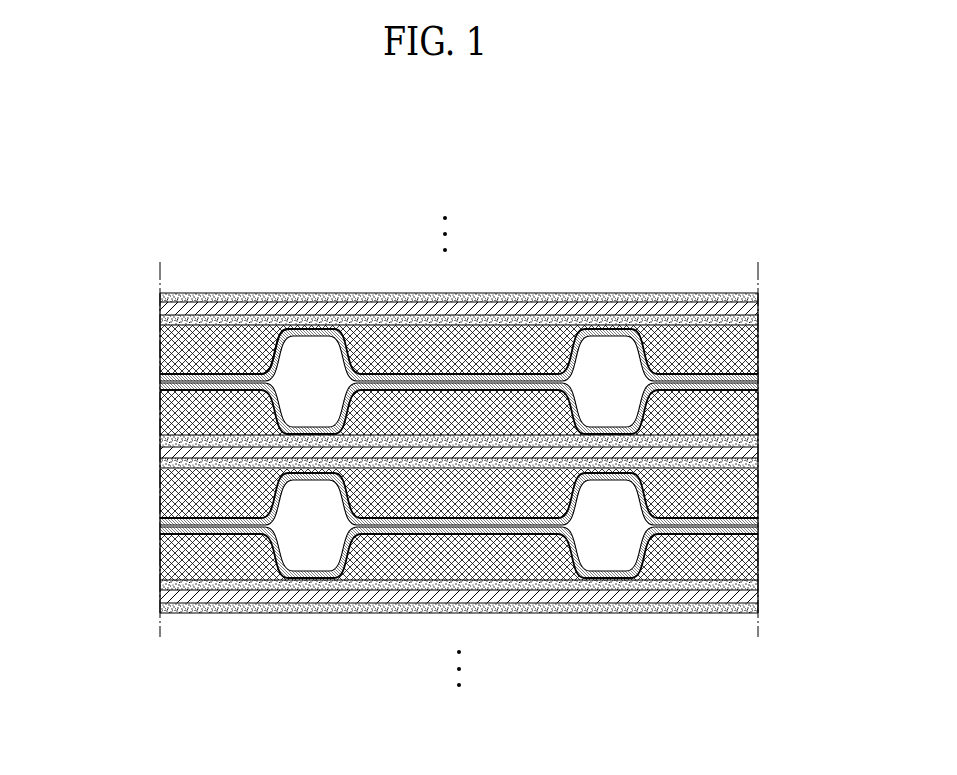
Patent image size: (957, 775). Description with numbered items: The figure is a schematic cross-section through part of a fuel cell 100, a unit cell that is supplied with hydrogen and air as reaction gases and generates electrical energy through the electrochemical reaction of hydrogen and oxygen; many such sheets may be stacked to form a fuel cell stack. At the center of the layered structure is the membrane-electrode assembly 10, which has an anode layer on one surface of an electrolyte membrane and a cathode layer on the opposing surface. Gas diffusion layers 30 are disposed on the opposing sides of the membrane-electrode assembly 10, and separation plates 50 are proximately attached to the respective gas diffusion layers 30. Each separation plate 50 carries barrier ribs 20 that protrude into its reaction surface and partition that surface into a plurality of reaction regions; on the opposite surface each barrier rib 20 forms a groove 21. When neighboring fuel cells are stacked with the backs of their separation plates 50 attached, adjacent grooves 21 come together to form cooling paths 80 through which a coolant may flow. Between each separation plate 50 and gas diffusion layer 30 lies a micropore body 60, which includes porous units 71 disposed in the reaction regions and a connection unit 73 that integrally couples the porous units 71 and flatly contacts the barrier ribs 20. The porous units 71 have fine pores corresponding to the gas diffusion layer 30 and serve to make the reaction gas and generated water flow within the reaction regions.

The fuel cell 100 is at (464, 190).
The membrane-electrode assembly 10 is at (773, 452).
The barrier rib 20 is at (324, 488).
The groove 21 is at (312, 477).
The gas diffusion layer 30 is at (160, 433).
The separation plate 50 is at (768, 518).
The micropore body 60 is at (605, 690).
The porous unit 71 is at (506, 528).
The connection unit 73 is at (612, 484).
The cooling path 80 is at (300, 536).